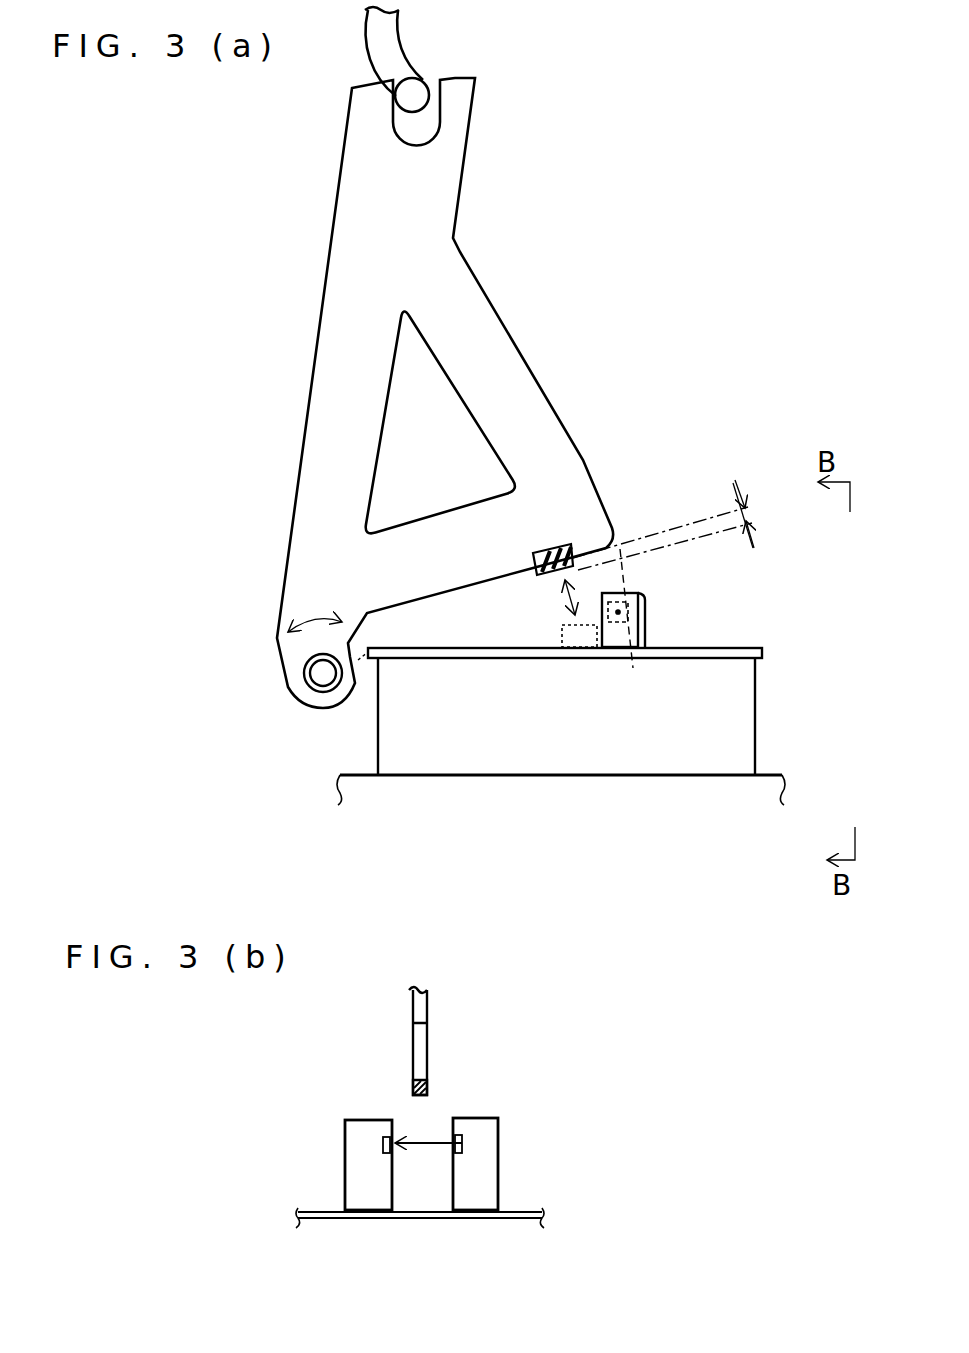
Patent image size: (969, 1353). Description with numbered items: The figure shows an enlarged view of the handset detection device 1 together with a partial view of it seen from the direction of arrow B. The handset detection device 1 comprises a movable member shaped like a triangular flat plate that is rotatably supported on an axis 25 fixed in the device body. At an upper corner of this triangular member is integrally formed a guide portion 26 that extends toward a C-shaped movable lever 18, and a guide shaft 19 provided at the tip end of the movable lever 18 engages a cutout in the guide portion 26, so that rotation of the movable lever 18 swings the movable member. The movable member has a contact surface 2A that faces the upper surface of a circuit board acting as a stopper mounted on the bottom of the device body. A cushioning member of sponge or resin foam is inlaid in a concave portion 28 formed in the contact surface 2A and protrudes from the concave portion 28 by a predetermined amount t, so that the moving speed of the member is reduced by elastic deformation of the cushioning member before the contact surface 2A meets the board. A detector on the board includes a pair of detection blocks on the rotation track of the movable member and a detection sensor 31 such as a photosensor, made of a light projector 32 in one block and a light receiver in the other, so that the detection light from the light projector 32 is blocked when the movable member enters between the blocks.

The handset detection device 1 is at (557, 800).
The contact surface 2A is at (510, 585).
The movable lever 18 is at (387, 50).
The guide shaft 19 is at (415, 95).
The axis 25 is at (307, 693).
The guide portion 26 is at (437, 208).
The concave portion 28 is at (560, 545).
The detection sensor 31 is at (463, 1157).
The light projector 32 is at (462, 1143).